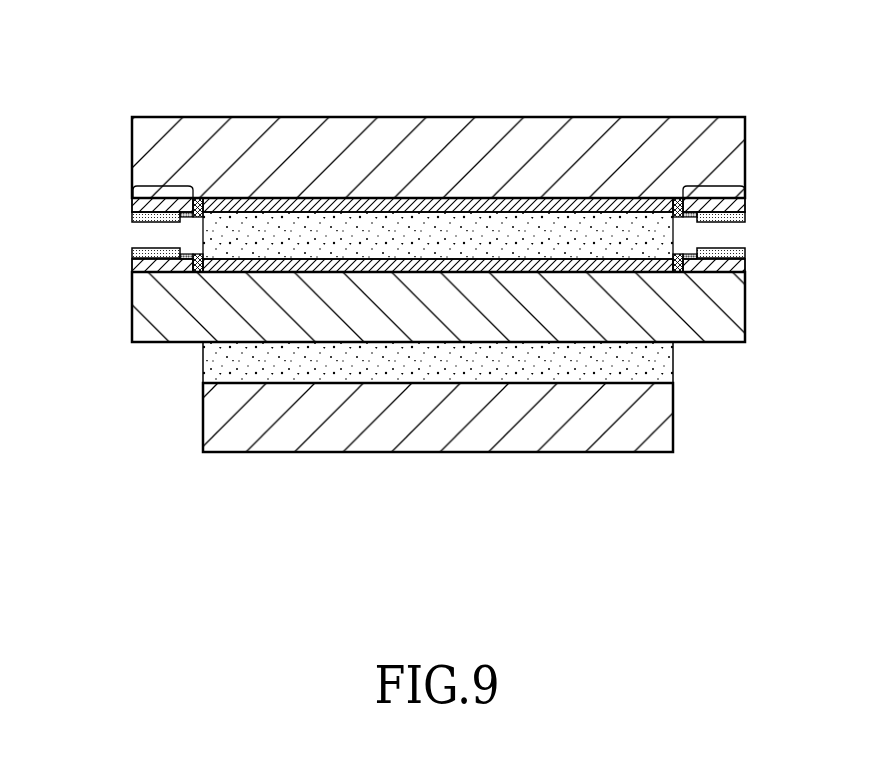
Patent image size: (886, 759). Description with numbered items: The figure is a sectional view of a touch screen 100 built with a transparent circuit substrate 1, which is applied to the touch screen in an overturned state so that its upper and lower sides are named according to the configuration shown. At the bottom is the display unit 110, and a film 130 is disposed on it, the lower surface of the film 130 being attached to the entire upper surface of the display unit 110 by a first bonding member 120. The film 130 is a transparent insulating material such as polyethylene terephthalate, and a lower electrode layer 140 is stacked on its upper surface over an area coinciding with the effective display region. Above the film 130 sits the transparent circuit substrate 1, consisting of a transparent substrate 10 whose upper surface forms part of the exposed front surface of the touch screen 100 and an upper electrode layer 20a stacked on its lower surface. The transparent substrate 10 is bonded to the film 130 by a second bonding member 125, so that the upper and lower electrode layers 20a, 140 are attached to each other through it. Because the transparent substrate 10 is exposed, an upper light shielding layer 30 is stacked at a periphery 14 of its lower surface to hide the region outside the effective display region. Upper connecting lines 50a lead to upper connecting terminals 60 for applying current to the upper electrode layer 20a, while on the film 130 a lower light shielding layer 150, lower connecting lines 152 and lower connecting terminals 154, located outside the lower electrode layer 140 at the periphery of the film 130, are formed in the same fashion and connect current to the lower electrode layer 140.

The transparent circuit substrate 1 is at (762, 76).
The transparent substrate 10 is at (638, 133).
The periphery 14 is at (167, 186).
The upper electrode layer 20a is at (518, 211).
The upper light shielding layer 30 is at (132, 204).
The upper connecting lines 50a is at (193, 222).
The upper connecting terminals 60 is at (132, 217).
The touch screen 100 is at (408, 518).
The display unit 110 is at (568, 438).
The first bonding member 120 is at (655, 367).
The second bonding member 125 is at (288, 218).
The film 130 is at (735, 303).
The lower electrode layer 140 is at (668, 250).
The lower light shielding layer 150 is at (138, 265).
The lower connecting lines 152 is at (202, 272).
The lower connecting terminals 154 is at (132, 254).